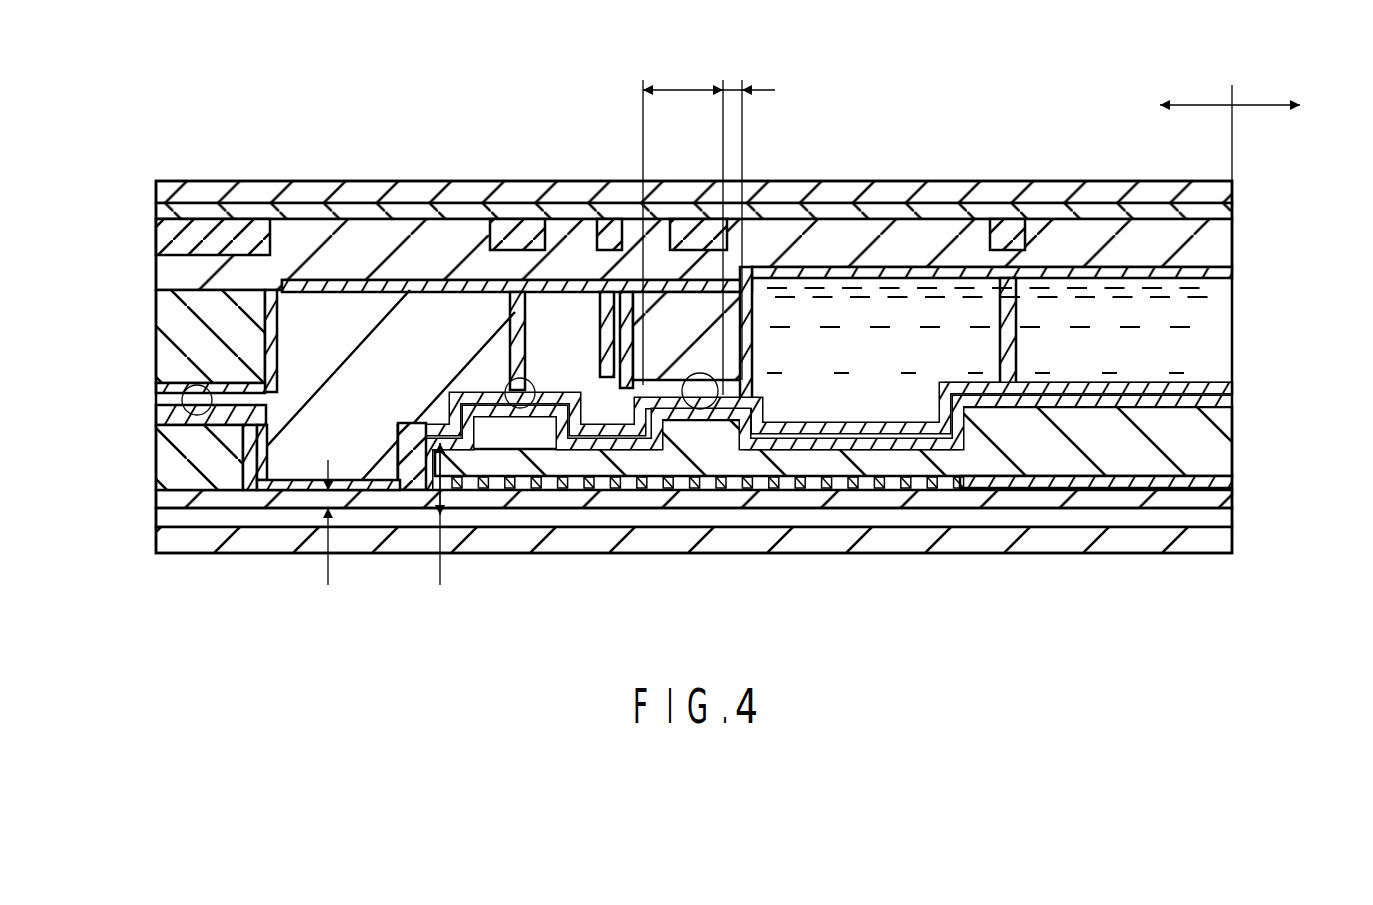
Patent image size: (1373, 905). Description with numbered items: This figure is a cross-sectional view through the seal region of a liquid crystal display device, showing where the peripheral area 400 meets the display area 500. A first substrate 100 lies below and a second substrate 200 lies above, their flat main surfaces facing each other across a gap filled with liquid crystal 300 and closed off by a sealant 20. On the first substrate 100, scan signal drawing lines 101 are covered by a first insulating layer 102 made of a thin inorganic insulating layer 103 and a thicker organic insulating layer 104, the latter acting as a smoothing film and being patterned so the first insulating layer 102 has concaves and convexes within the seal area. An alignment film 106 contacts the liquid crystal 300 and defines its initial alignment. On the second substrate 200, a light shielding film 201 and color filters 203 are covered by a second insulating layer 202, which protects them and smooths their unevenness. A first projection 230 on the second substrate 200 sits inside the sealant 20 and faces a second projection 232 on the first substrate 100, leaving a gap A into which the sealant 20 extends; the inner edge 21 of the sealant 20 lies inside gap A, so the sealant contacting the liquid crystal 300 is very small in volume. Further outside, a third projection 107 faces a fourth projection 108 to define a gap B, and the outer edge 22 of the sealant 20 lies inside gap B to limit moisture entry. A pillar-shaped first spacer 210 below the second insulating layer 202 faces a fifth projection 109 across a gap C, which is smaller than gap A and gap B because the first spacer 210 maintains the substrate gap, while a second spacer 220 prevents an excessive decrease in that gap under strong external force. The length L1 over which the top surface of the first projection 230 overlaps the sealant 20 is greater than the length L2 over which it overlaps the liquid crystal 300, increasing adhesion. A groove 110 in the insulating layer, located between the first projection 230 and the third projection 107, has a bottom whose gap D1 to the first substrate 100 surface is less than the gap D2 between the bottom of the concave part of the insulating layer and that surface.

The sealant 20 is at (352, 305).
The inner edge 21 is at (725, 386).
The outer edge 22 is at (182, 400).
The first substrate 100 is at (1062, 540).
The scan signal drawing lines 101 is at (905, 490).
The first insulating layer 102 is at (1305, 398).
The inorganic insulating layer 103 is at (1222, 402).
The organic insulating layer 104 is at (1224, 430).
The alignment film 106 is at (1222, 270).
The third projection 107 is at (170, 357).
The fourth projection 108 is at (170, 455).
The fifth projection 109 is at (522, 440).
The groove 110 is at (283, 470).
The second substrate 200 is at (950, 195).
The light shielding film 201 is at (1090, 195).
The second insulating layer 202 is at (1148, 238).
The color filters 203 is at (210, 232).
The first spacer 210 is at (517, 300).
The second spacer 220 is at (607, 300).
The first projection 230 is at (692, 292).
The second projection 232 is at (693, 440).
The liquid crystal 300 is at (1217, 330).
The peripheral area 400 is at (1196, 131).
The display area 500 is at (1266, 94).
The gap A is at (705, 410).
The gap B is at (197, 416).
The gap C is at (525, 385).
The gap D1 is at (345, 537).
The gap D2 is at (423, 529).
The length L1 is at (683, 228).
The length L2 is at (742, 80).